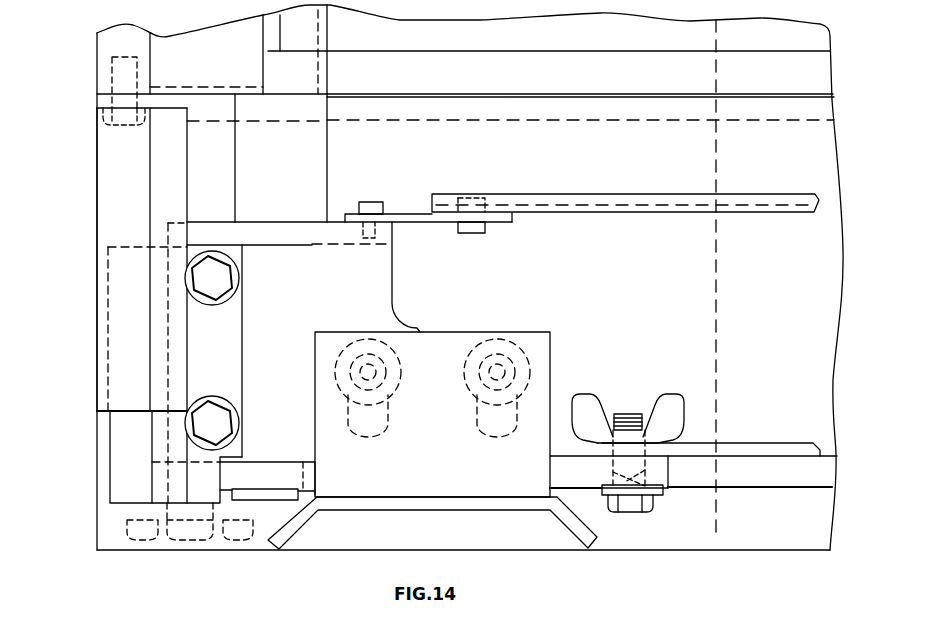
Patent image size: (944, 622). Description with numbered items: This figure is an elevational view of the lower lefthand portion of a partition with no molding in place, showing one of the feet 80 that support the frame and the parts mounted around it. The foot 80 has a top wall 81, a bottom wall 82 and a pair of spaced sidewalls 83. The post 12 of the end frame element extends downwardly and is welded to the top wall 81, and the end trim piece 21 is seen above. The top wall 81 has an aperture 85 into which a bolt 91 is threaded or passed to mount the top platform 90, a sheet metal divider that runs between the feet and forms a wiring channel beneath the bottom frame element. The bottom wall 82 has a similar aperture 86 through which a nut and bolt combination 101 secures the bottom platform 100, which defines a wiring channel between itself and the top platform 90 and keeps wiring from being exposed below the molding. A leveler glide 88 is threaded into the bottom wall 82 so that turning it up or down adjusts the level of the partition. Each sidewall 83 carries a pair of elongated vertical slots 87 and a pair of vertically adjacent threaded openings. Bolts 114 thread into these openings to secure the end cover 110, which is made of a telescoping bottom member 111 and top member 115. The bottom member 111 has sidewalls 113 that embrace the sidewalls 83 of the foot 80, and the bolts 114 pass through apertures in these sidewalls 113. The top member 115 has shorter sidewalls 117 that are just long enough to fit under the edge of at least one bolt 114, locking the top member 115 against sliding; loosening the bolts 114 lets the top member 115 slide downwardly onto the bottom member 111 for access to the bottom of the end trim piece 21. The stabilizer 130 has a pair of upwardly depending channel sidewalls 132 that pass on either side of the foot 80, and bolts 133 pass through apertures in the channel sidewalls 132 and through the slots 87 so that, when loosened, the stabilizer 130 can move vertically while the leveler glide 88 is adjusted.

The post 12 is at (349, 158).
The end trim piece 21 is at (98, 63).
The foot 80 is at (322, 262).
The top wall 81 is at (343, 232).
The bottom wall 82 is at (580, 480).
The sidewall 83 is at (346, 314).
The aperture 85 is at (395, 245).
The aperture 86 is at (649, 512).
The elongated vertical slot 87 is at (378, 420).
The leveler glide 88 is at (128, 532).
The top platform 90 is at (607, 195).
The bolt 91 is at (380, 200).
The bottom platform 100 is at (770, 462).
The nut and bolt combination 101 is at (641, 400).
The end cover member 110 is at (100, 157).
The bottom member 111 is at (108, 440).
The sidewall 113 is at (289, 350).
The bolt 114 is at (226, 283).
The top member 115 is at (98, 222).
The sidewall 117 is at (147, 305).
The stabilizer 130 is at (392, 512).
The channel sidewall 132 is at (450, 342).
The bolt 133 is at (374, 366).